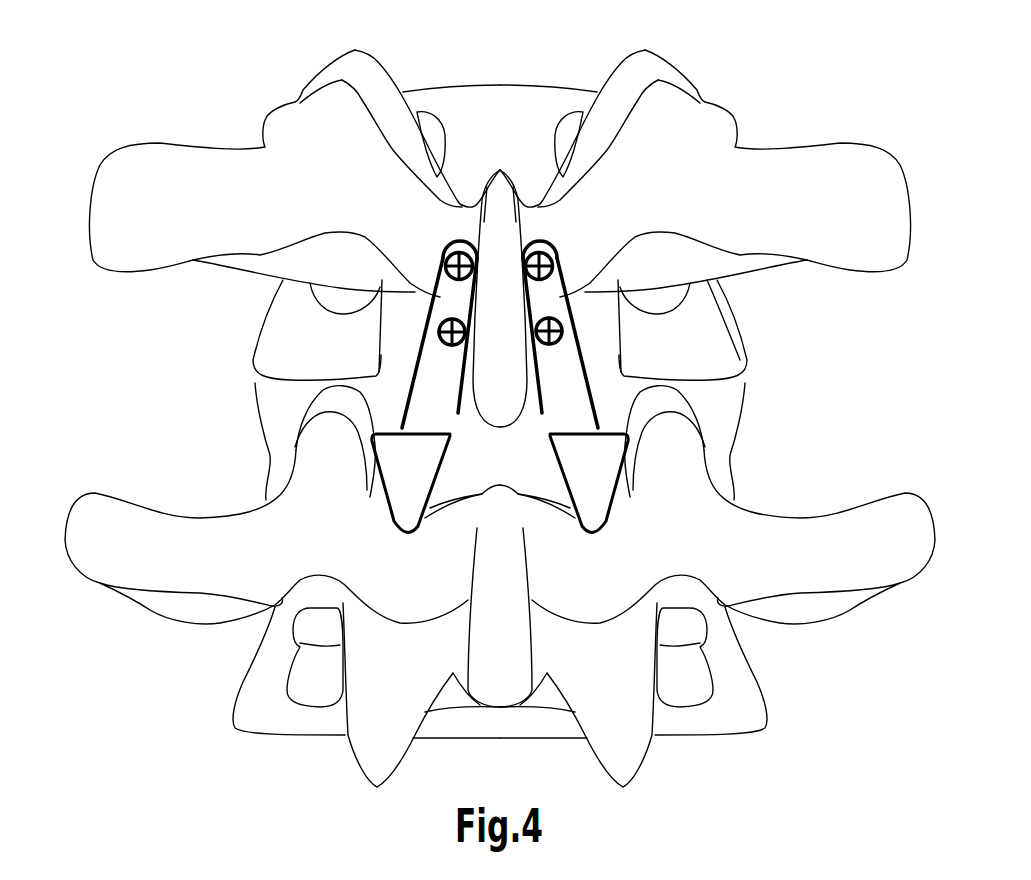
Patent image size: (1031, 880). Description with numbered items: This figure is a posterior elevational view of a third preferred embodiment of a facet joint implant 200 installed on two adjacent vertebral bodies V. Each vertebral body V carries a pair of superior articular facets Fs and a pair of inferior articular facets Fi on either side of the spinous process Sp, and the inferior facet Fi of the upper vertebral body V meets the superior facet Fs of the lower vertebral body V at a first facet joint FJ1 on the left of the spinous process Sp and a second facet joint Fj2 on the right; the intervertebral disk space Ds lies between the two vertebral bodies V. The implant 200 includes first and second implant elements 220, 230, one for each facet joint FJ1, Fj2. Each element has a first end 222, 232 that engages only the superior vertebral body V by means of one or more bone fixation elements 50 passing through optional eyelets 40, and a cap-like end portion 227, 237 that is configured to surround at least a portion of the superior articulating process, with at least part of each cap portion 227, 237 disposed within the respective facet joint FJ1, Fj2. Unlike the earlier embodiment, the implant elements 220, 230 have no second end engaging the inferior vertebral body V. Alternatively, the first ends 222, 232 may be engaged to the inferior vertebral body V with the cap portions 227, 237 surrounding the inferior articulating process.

The facet joint implant 200 is at (762, 80).
The first implant element 220 is at (460, 240).
The first end 222 is at (447, 247).
The cap portion 227 is at (410, 496).
The second implant element 230 is at (537, 240).
The first end 232 is at (553, 247).
The cap portion 237 is at (597, 498).
The eyelet 40 is at (448, 264).
The bone fixation element 50 is at (449, 276).
The vertebral body V is at (852, 215).
The spinous process Sp is at (499, 293).
The inferior articular facet Fi is at (410, 366).
The superior articular facet Fs is at (337, 457).
The intervertebral disk space Ds is at (765, 414).
The first facet joint FJ1 is at (378, 523).
The second facet joint Fj2 is at (622, 523).